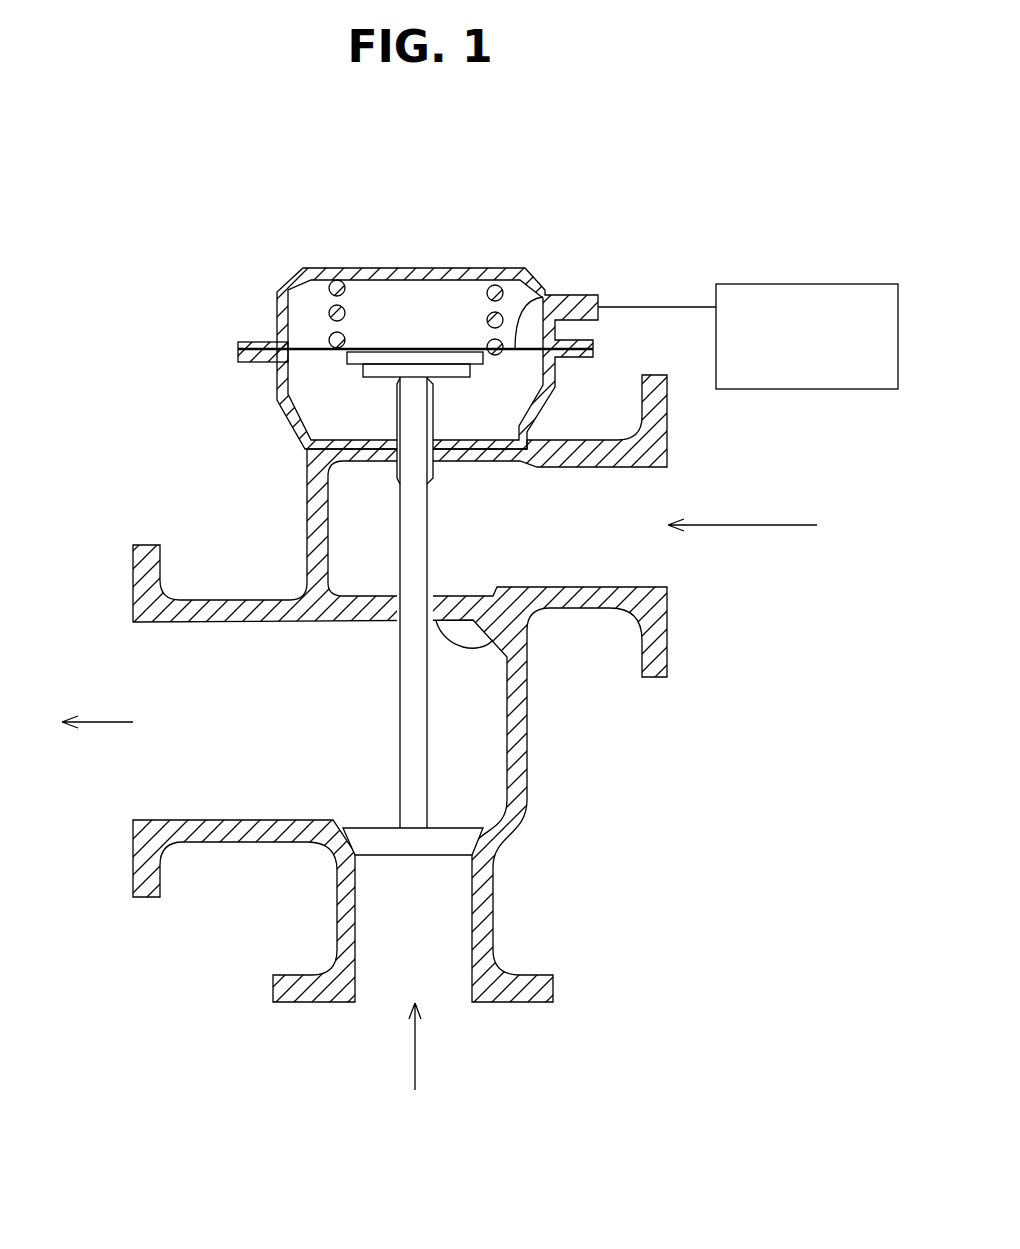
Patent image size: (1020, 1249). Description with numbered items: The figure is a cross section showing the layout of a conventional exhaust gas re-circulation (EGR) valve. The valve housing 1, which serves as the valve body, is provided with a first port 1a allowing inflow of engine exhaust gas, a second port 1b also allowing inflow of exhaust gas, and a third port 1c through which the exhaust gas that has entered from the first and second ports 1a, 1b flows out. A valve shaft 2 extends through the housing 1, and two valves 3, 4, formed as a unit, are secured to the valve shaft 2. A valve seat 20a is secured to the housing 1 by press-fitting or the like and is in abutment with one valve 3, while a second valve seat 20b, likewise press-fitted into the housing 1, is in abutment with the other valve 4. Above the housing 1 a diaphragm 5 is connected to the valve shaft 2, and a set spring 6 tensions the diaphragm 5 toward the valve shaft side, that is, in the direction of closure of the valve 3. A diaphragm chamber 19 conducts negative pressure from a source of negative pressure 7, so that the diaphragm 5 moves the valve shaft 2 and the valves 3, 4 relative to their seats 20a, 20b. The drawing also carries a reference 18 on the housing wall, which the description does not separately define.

The valve housing 1 is at (298, 592).
The first port 1a is at (445, 1005).
The second port 1b is at (668, 495).
The third port 1c is at (130, 770).
The valve shaft 2 is at (415, 724).
The valve 3 is at (425, 842).
The valve 4 is at (497, 632).
The diaphragm 5 is at (553, 292).
The set spring 6 is at (328, 310).
The source of negative pressure 7 is at (800, 284).
The partition wall 18 is at (277, 857).
The diaphragm chamber 19 is at (451, 300).
The valve seat 20a is at (345, 818).
The valve seat 20b is at (495, 590).